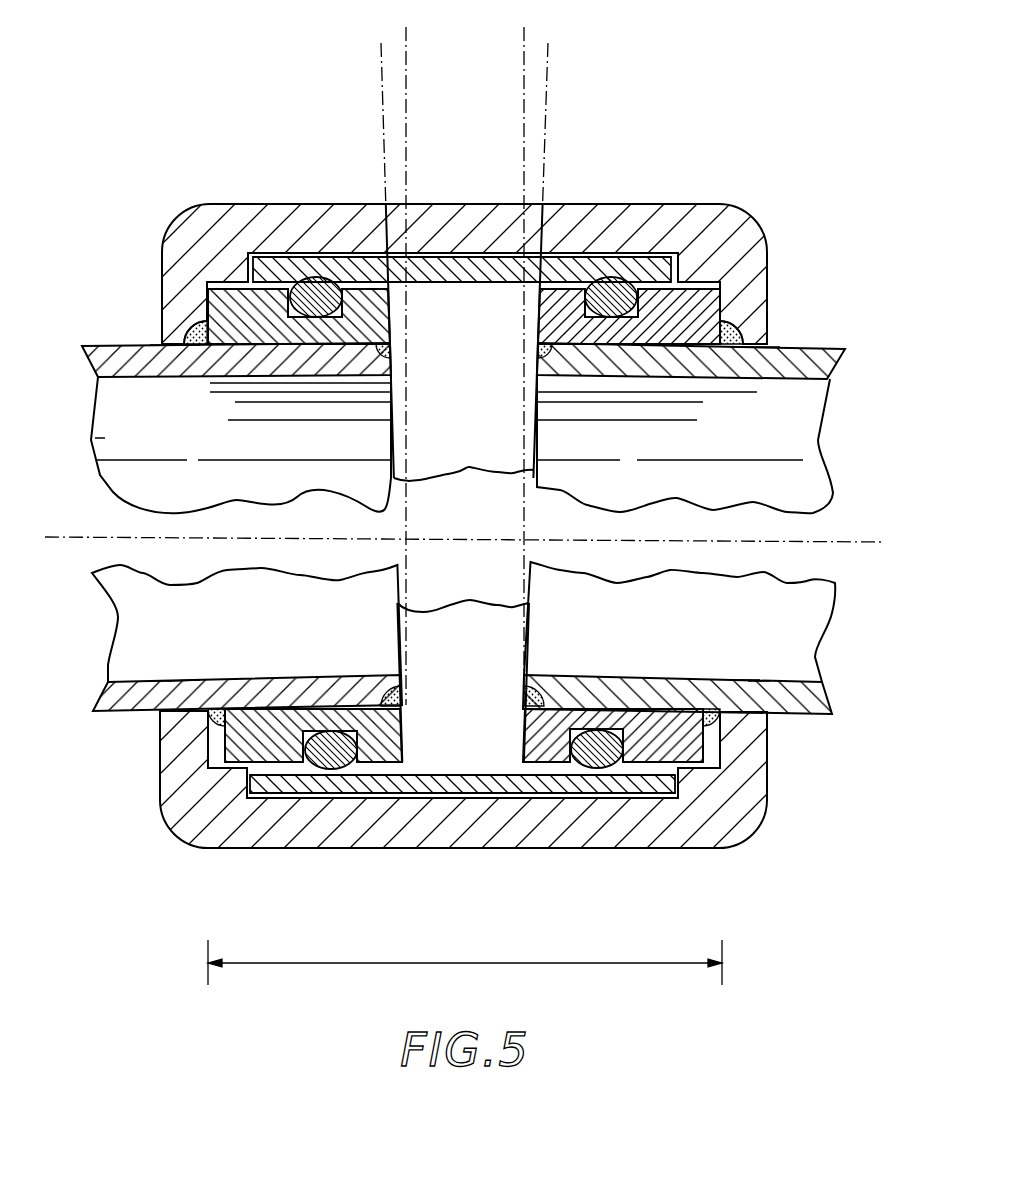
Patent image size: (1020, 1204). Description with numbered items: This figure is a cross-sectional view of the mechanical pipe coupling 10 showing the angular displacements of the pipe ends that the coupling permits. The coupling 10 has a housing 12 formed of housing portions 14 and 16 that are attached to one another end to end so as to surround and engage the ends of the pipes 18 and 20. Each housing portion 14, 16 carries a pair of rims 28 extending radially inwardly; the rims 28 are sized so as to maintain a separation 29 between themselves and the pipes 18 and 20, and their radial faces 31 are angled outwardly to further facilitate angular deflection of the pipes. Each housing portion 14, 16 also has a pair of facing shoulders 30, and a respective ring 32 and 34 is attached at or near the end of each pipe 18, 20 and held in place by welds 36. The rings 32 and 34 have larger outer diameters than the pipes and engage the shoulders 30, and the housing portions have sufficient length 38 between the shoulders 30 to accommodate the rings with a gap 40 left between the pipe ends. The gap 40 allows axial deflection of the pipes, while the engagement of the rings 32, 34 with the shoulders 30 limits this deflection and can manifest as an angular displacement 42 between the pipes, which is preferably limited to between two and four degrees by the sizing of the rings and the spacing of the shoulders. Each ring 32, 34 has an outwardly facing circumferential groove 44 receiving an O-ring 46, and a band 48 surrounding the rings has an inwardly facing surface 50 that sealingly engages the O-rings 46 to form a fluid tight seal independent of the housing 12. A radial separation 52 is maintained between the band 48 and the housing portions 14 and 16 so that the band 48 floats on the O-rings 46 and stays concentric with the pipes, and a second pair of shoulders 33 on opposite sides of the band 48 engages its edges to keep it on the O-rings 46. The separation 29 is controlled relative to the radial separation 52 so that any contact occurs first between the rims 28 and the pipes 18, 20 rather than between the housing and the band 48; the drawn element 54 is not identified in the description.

The mechanical pipe coupling 10 is at (727, 178).
The housing 12 is at (464, 233).
The housing portion 14 is at (617, 222).
The housing portion 16 is at (638, 833).
The pipe 18 is at (110, 712).
The pipe 20 is at (808, 712).
The rim 28 is at (163, 325).
The separation 29 is at (187, 346).
The shoulder 30 is at (210, 289).
The radial face 31 is at (167, 346).
The ring 32 is at (391, 300).
The shoulder 33 is at (733, 847).
The ring 34 is at (520, 743).
The weld 36 is at (390, 345).
The length 38 is at (562, 964).
The gap 40 is at (479, 441).
The angular displacement 42 is at (455, 65).
The circumferential groove 44 is at (303, 740).
The O-ring 46 is at (292, 765).
The band 48 is at (540, 210).
The inwardly facing surface 50 is at (478, 774).
The radial separation 52 is at (462, 811).
The plate recess 54 is at (674, 282).